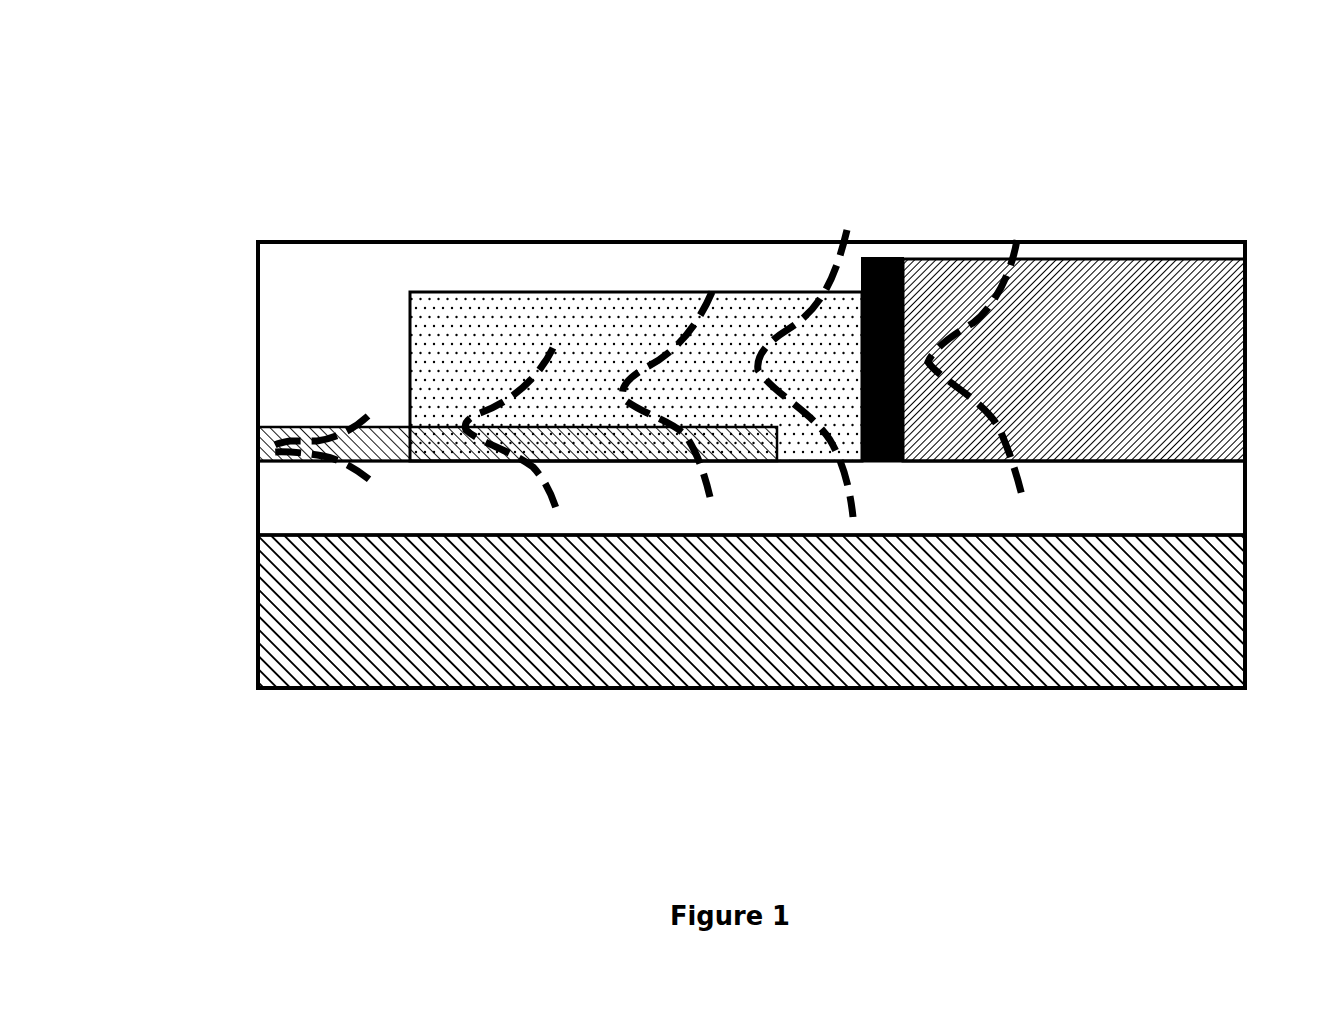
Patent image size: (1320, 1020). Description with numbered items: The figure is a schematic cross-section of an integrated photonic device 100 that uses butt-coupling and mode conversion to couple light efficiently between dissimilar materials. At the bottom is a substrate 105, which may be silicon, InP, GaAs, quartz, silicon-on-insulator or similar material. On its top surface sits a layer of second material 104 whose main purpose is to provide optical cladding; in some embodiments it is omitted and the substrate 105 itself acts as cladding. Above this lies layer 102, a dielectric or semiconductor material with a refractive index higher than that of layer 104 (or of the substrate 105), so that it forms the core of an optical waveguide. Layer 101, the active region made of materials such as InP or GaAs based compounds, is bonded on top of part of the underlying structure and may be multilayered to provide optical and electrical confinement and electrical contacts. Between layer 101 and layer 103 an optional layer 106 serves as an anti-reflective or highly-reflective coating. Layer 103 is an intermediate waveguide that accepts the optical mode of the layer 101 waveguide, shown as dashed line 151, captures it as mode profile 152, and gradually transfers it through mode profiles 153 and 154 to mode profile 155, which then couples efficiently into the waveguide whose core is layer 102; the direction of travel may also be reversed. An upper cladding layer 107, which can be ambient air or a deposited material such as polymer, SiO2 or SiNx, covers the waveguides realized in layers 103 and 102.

The integrated photonic device 100 is at (256, 142).
The layer (active region) 101 is at (1178, 292).
The layer 102 is at (258, 443).
The layer (intermediate waveguide) 103 is at (480, 325).
The layer of second material 104 is at (260, 507).
The substrate 105 is at (258, 612).
The layer (optional coating) 106 is at (903, 260).
The upper cladding layer 107 is at (283, 273).
The dashed line (mode profile) 151 is at (1023, 238).
The mode profile 152 is at (845, 232).
The mode profile 153 is at (708, 295).
The mode profile 154 is at (552, 350).
The mode profile 155 is at (357, 412).